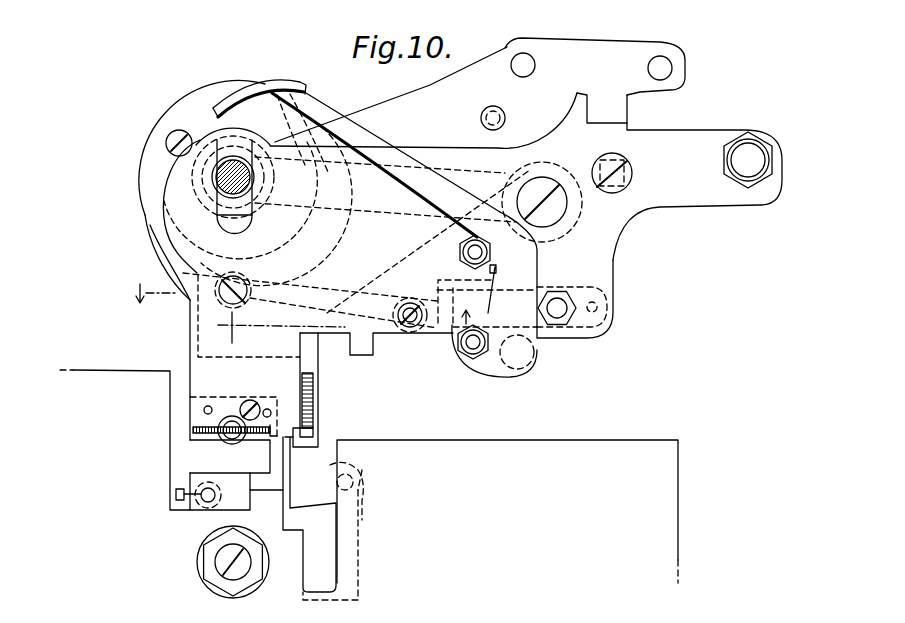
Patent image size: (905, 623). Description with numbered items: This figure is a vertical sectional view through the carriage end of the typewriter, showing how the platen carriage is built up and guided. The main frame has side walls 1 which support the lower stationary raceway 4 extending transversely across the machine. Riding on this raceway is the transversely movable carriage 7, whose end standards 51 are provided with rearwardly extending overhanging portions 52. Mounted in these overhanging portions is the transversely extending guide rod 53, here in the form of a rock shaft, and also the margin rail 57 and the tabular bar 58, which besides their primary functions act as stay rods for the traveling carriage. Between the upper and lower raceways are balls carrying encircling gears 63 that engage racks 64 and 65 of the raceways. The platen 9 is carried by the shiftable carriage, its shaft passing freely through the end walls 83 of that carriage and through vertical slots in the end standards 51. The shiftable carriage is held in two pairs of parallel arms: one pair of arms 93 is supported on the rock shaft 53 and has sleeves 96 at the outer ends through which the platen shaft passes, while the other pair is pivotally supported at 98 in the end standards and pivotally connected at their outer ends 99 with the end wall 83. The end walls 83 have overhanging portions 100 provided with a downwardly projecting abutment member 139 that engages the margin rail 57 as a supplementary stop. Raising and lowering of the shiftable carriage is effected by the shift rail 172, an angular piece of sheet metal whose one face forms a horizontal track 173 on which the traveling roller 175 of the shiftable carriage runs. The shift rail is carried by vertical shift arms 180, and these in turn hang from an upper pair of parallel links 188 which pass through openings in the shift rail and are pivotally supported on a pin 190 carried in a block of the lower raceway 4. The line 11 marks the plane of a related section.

The side walls 1 is at (495, 445).
The lower stationary raceway 4 is at (197, 458).
The transversely movable carriage 7 is at (174, 258).
The platen 9 is at (178, 100).
The section line 11 is at (301, 305).
The end standards 51 is at (189, 322).
The overhanging portions 52 is at (690, 130).
The guide rod 53 is at (552, 212).
The margin rail 57 is at (617, 160).
The tabular bar 58 is at (753, 157).
The encircling gears 63 is at (222, 440).
The rack 64 is at (190, 429).
The rack 65 is at (270, 438).
The end walls 83 is at (383, 106).
The parallel arms 93 is at (405, 168).
The sleeves 96 is at (218, 142).
The pivot 98 is at (413, 329).
The outer ends 99 is at (295, 296).
The overhanging portions 100 is at (586, 44).
The abutment member 139 is at (602, 108).
The shift rail 172 is at (288, 474).
The horizontal track 173 is at (312, 437).
The traveling roller 175 is at (305, 400).
The vertical shift arms 180 is at (360, 581).
The upper parallel links 188 is at (330, 517).
The pin 190 is at (205, 501).